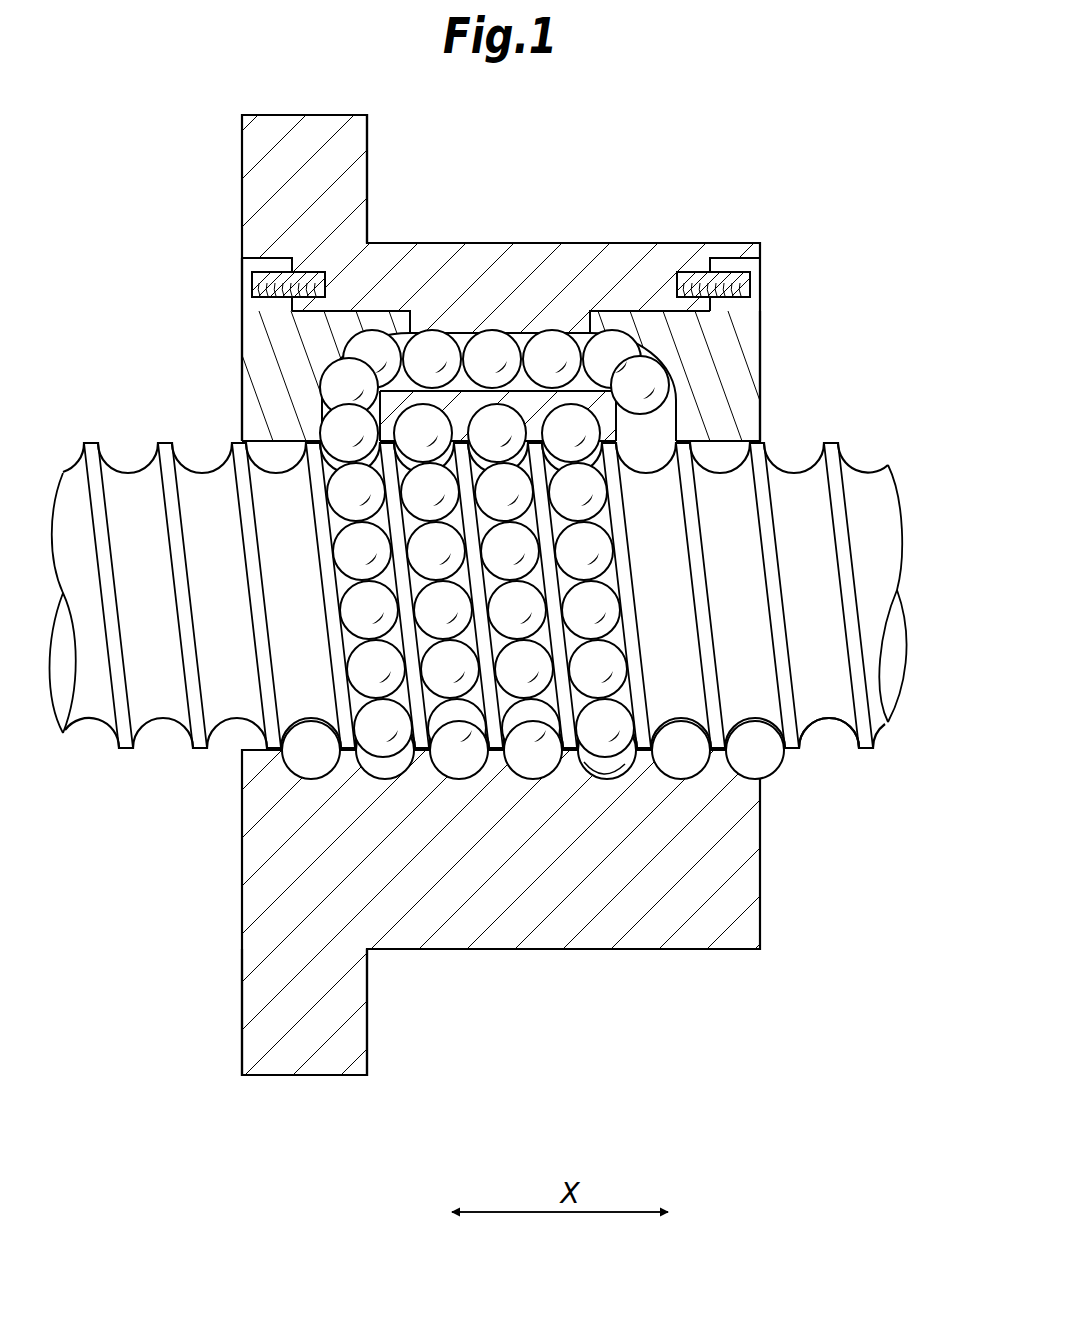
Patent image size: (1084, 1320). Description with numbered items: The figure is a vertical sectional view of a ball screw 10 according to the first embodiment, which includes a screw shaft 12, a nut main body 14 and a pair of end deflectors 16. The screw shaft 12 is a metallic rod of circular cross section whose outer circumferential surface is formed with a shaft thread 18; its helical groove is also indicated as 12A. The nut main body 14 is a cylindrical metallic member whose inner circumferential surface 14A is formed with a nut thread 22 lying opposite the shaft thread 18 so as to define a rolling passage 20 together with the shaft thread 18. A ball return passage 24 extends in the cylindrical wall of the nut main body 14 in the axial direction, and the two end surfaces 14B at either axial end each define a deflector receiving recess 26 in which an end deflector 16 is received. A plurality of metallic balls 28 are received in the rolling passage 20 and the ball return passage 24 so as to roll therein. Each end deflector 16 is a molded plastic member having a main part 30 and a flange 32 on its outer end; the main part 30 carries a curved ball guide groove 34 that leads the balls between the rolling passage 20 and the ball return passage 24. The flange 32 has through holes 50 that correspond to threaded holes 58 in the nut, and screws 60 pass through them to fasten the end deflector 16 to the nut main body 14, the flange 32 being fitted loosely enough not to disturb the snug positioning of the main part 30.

The ball screw 10 is at (792, 148).
The screw shaft 12 is at (835, 440).
The shaft thread groove 12A is at (870, 748).
The nut main body 14 is at (719, 238).
The inner circumferential surface 14A is at (532, 765).
The end surfaces 14B is at (240, 878).
The end deflector 16 is at (240, 431).
The shaft thread 18 is at (827, 725).
The rolling passage 20 is at (692, 768).
The nut thread 22 is at (612, 772).
The ball return passage 24 is at (497, 358).
The deflector receiving recess 26 is at (340, 350).
The balls 28 is at (373, 775).
The main part 30 is at (335, 305).
The flange 32 is at (249, 252).
The ball guide groove 34 is at (345, 358).
The through holes 50 is at (250, 292).
The threaded holes 58 is at (289, 280).
The screws 60 is at (253, 272).